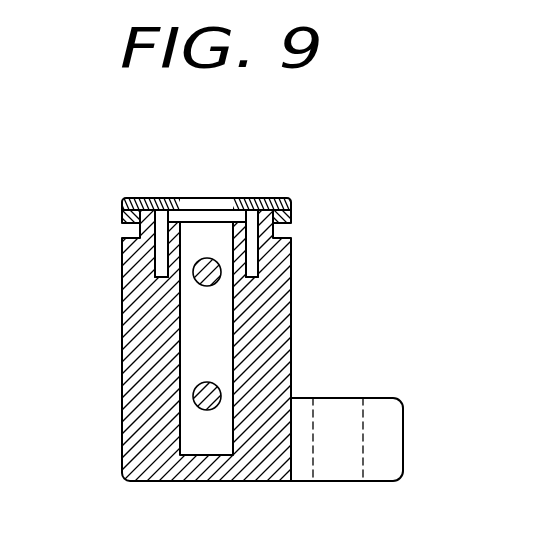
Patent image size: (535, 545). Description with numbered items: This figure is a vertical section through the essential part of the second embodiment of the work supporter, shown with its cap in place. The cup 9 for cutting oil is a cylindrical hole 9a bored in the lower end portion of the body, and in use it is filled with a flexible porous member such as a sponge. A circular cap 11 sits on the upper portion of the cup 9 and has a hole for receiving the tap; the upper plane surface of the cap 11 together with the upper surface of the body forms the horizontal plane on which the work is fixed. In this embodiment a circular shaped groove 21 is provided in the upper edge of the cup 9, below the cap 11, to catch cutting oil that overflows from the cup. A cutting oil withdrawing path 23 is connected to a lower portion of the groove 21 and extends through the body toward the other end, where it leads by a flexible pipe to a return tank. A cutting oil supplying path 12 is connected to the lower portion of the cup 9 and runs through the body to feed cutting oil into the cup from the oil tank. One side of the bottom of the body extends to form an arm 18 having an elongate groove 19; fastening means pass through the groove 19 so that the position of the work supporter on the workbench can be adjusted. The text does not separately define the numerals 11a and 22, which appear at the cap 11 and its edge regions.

The cup 9 is at (125, 320).
The cylindrical hole 9a is at (207, 335).
The cap 11 is at (165, 200).
The cap opening 11a is at (213, 203).
The cutting oil supplying path 12 is at (160, 418).
The arm 18 is at (392, 433).
The elongate groove 19 is at (332, 410).
The circular shaped groove 21 is at (160, 263).
The cap end flange 22 is at (123, 210).
The cutting oil withdrawing path 23 is at (208, 268).